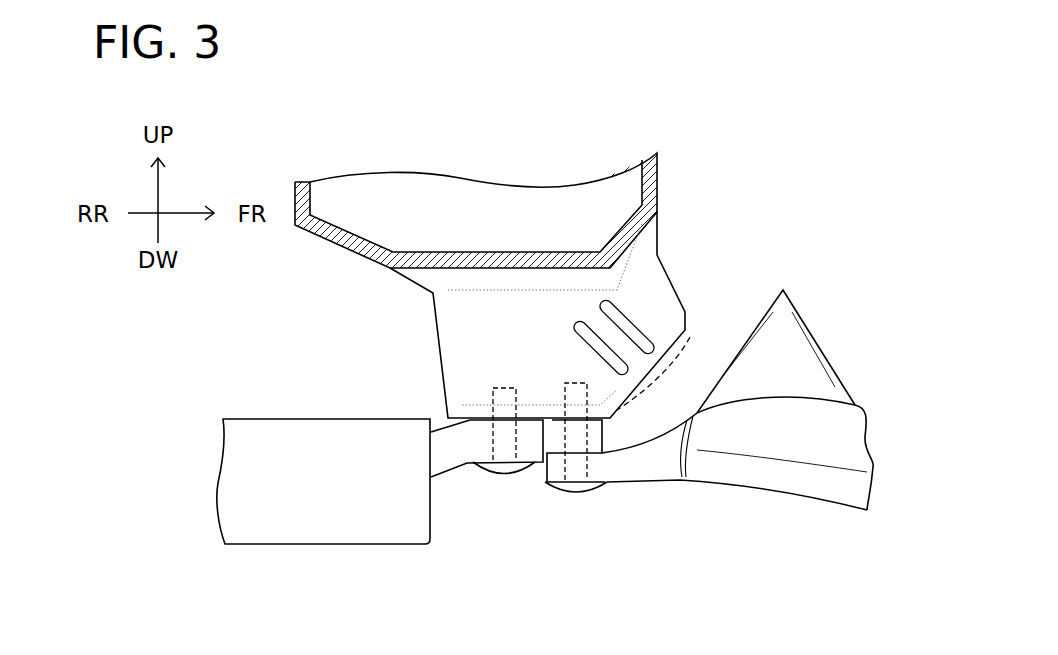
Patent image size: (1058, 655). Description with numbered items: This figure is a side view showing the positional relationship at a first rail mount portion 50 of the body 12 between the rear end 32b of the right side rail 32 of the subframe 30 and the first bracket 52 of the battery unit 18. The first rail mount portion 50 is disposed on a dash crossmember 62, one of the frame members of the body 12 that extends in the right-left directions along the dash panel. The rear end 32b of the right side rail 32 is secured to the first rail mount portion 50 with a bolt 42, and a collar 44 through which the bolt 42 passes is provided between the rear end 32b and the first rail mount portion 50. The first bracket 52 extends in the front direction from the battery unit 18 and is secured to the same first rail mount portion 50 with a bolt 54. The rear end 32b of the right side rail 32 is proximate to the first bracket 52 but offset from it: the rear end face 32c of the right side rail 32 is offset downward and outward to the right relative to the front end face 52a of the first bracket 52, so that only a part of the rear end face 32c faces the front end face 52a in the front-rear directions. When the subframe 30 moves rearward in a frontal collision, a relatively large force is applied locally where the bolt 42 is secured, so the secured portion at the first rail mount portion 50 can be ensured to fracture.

The body 12 is at (383, 153).
The dash crossmember 62 is at (657, 183).
The first rail mount portion 50 is at (452, 343).
The bolt 54 is at (520, 400).
The battery unit 18 is at (372, 530).
The first bracket 52 is at (463, 455).
The front end face 52a is at (543, 438).
The subframe 30 is at (835, 281).
The right side rail 32 is at (827, 487).
The rear end 32b is at (608, 470).
The rear end face 32c is at (533, 483).
The bolt 42 is at (690, 337).
The collar 44 is at (600, 436).